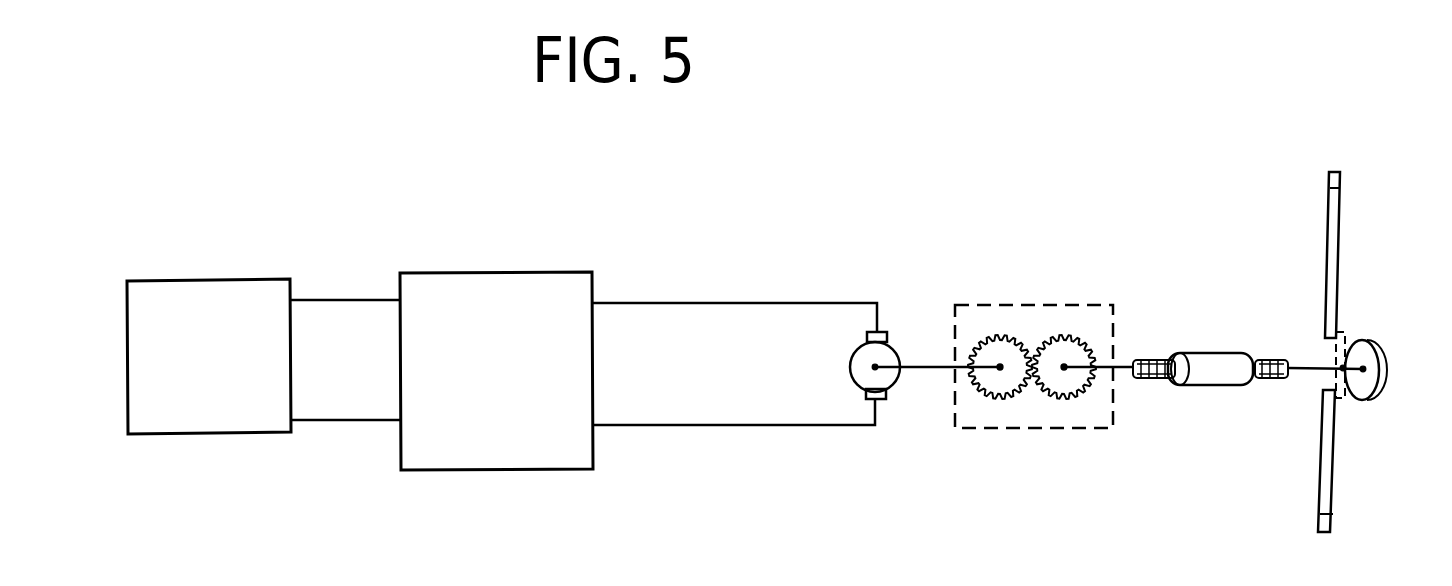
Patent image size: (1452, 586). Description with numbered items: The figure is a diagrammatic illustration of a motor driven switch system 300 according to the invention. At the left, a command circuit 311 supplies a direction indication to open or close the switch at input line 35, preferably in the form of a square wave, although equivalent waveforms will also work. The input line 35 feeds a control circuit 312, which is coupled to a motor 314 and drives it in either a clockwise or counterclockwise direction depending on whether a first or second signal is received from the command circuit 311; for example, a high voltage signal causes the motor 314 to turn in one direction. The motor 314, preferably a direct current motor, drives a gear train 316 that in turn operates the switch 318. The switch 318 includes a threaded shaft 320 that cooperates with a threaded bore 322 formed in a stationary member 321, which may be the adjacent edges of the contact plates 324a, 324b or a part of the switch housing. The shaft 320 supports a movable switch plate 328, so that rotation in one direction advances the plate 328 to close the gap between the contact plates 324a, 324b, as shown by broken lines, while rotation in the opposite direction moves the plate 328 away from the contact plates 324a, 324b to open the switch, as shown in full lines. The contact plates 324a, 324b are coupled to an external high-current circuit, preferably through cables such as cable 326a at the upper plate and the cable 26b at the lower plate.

The input line 35 is at (398, 292).
The motor driven switch system 300 is at (775, 253).
The command circuit 311 is at (211, 417).
The control circuit 312 is at (498, 433).
The motor 314 is at (897, 380).
The gear train 316 is at (1045, 428).
The switch 318 is at (1240, 293).
The threaded shaft 320 is at (1302, 367).
The stationary member 321 is at (1225, 373).
The threaded bore 322 is at (1170, 363).
The contact plate 324a is at (1325, 250).
The contact plate 324b is at (1321, 467).
The cable 326a is at (1340, 188).
The lower plate end 26b is at (1387, 512).
The movable switch plate 328 is at (1387, 370).